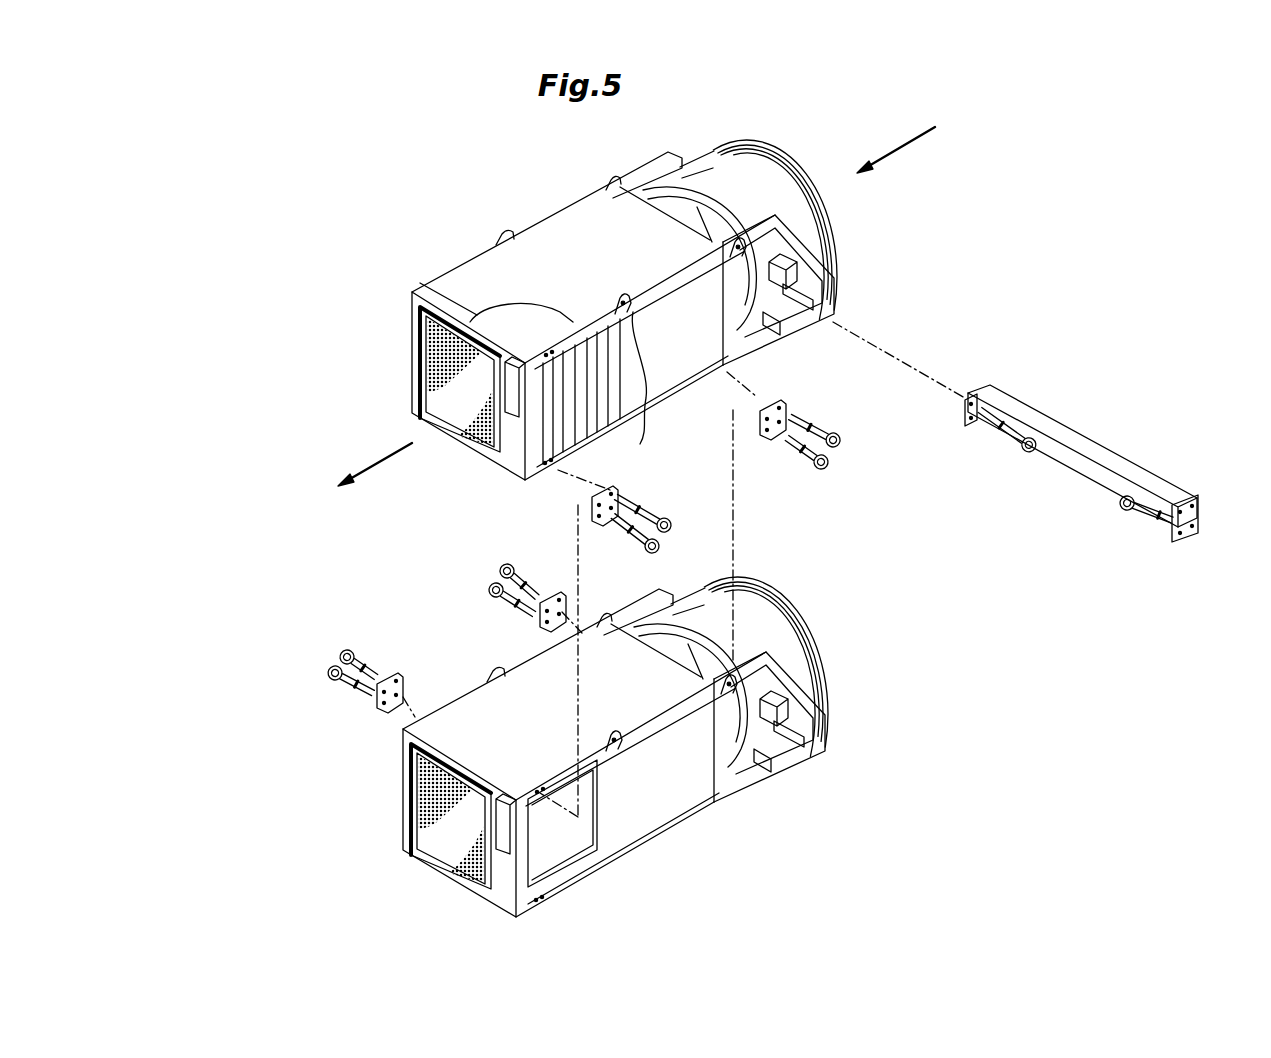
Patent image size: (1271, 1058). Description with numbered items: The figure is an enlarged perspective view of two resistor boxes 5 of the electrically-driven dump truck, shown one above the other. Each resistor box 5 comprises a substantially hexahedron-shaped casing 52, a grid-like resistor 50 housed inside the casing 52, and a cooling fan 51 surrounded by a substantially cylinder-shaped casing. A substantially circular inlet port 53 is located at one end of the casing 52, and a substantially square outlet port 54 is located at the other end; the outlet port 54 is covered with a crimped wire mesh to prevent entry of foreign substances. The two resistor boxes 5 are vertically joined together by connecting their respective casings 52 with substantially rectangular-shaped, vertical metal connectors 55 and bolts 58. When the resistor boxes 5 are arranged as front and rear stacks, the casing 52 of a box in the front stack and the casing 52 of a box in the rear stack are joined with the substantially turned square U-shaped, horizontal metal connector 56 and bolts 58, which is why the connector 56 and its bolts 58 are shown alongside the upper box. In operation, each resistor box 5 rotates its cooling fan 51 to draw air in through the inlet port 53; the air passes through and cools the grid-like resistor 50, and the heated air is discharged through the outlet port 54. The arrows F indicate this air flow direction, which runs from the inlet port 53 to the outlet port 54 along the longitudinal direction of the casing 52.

The resistor box 5 is at (262, 599).
The grid-like resistor 50 is at (539, 326).
The cooling fan 51 is at (706, 183).
The casing 52 is at (838, 299).
The inlet port 53 is at (806, 168).
The outlet port 54 is at (443, 389).
The vertical metal connector 55 is at (616, 491).
The horizontal metal connector 56 is at (1100, 446).
The bolt 58 is at (668, 521).